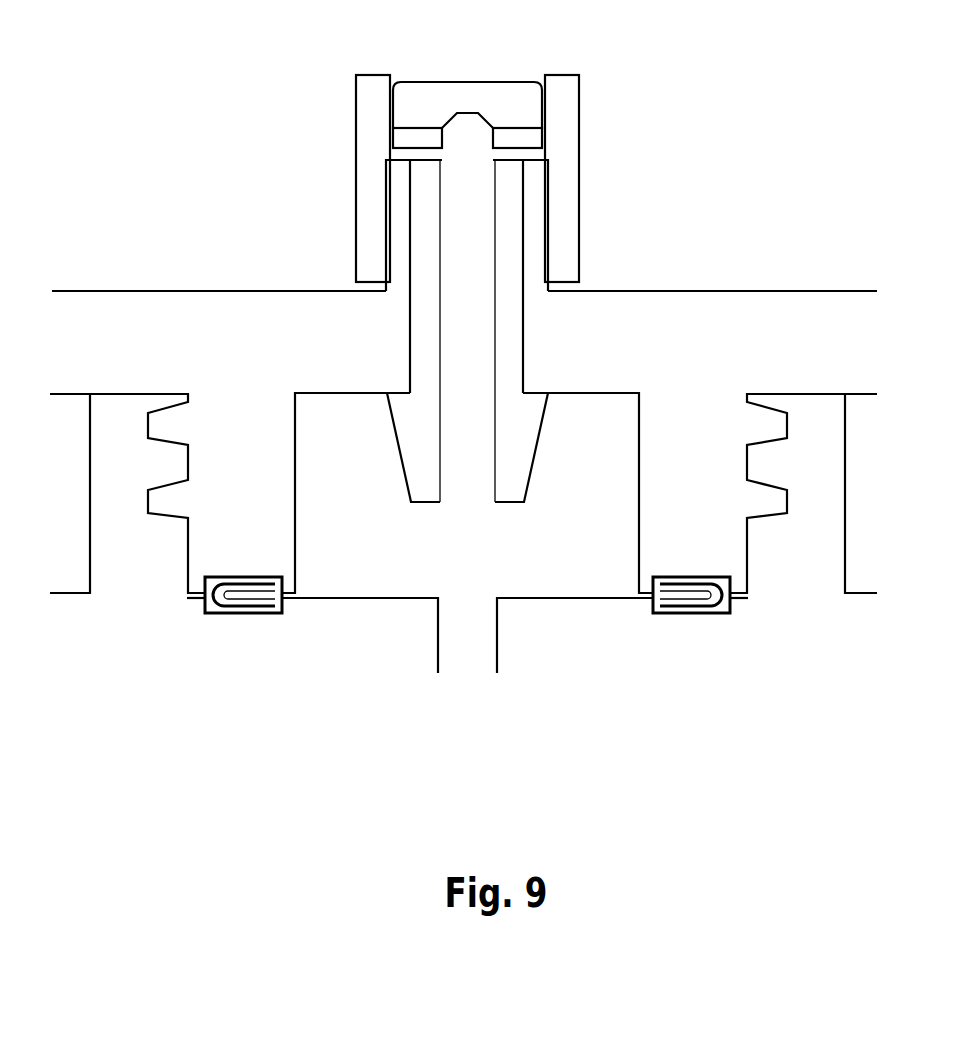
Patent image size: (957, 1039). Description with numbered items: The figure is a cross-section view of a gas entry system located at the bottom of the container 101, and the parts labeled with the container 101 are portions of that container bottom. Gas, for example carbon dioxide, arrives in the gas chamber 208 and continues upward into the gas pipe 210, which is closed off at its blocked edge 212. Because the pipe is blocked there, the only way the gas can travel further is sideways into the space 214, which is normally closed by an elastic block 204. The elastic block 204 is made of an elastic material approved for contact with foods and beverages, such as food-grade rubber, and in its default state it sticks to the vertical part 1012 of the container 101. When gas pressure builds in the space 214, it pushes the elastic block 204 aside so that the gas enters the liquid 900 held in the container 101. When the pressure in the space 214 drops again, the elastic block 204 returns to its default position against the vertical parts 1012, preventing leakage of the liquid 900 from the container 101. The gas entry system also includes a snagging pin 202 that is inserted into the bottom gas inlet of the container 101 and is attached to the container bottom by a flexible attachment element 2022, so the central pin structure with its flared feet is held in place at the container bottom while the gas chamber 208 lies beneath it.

The liquid 900 is at (461, 346).
The container 101 is at (123, 290).
The vertical part of the container 1012 is at (397, 190).
The snagging pin 202 is at (517, 331).
The flexible attachment element 2022 is at (402, 425).
The elastic block 204 is at (359, 231).
The gas chamber 208 is at (376, 580).
The gas pipe 210 is at (460, 363).
The blocked edge 212 is at (467, 120).
The space 214 is at (392, 148).